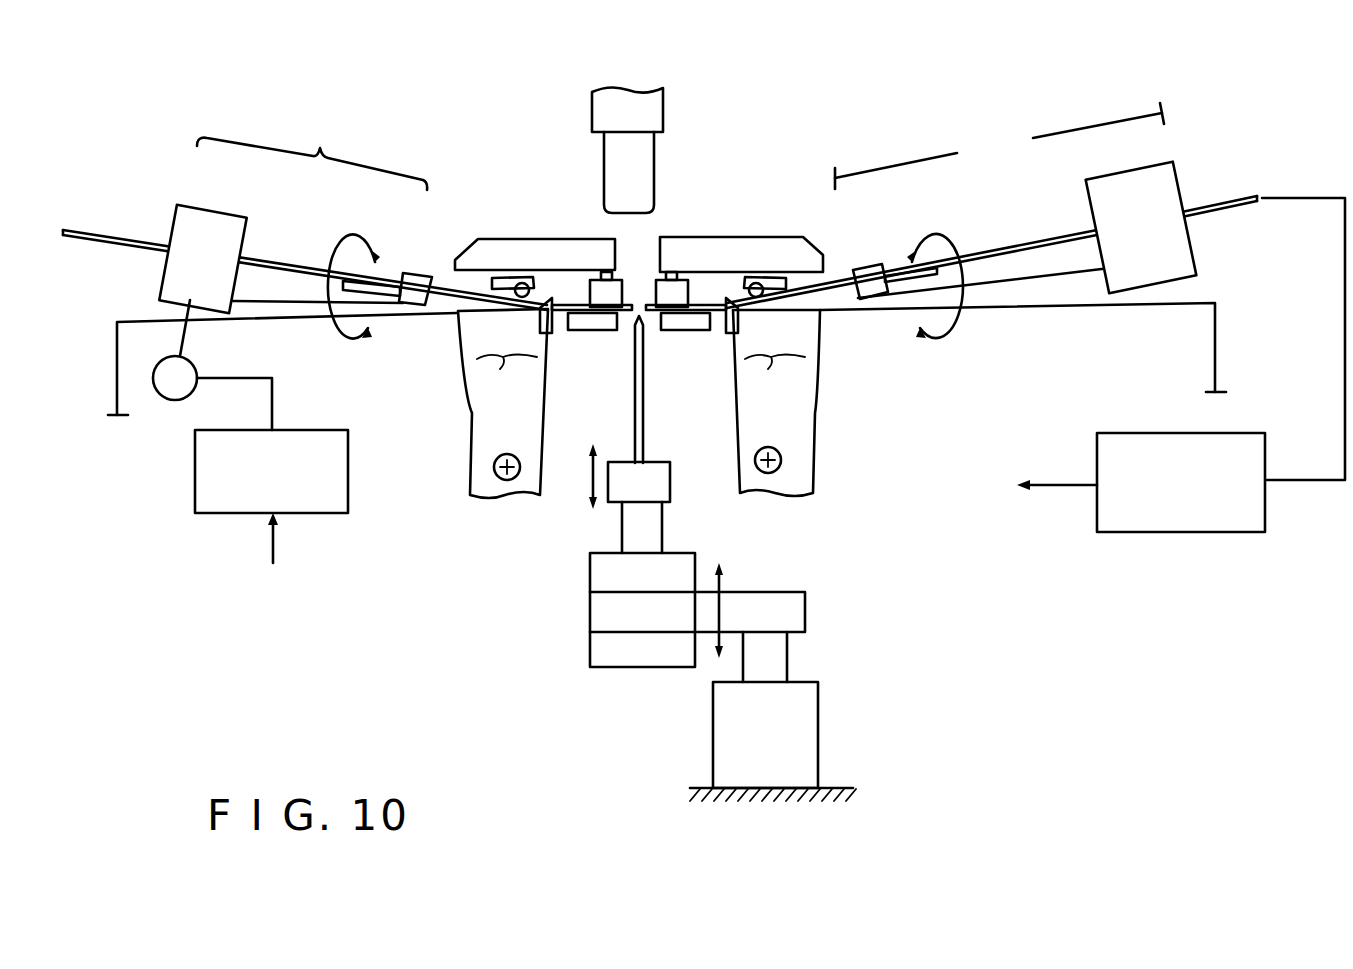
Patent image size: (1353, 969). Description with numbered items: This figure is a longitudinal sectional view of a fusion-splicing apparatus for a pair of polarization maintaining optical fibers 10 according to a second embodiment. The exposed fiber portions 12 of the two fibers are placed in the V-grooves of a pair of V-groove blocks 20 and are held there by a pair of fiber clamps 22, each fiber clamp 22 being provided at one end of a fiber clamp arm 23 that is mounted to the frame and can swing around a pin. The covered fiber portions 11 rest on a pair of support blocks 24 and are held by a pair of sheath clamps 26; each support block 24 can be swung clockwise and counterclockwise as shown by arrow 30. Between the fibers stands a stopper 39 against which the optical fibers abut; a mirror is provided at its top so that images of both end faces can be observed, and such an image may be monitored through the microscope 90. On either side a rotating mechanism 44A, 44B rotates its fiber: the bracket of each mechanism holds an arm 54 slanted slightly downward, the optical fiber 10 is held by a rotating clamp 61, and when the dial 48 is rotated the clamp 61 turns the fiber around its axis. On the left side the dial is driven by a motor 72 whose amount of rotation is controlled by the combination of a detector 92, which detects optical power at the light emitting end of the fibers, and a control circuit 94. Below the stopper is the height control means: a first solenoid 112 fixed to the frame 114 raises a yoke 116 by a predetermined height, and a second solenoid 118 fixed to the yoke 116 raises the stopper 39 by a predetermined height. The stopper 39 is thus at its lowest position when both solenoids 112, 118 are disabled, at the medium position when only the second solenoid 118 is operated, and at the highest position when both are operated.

The polarization maintaining optical fiber 10 is at (104, 230).
The covered fiber portion 11 is at (522, 308).
The exposed fiber portion 12 is at (583, 330).
The V-groove block 20 is at (605, 330).
The fiber clamp 22 is at (593, 293).
The fiber clamp arm 23 is at (530, 250).
The support block 24 is at (472, 429).
The sheath clamp 26 is at (520, 280).
The arrow 30 is at (641, 380).
The stopper 39 is at (646, 423).
The rotating mechanism 44A is at (1031, 201).
The rotating mechanism 44B is at (280, 281).
The dial 48 is at (1163, 192).
The arm 54 is at (284, 285).
The rotating clamp 61 is at (863, 263).
The motor 72 is at (172, 402).
The microscope 90 is at (663, 107).
The detector 92 is at (1137, 433).
The control circuit 94 is at (348, 483).
The first solenoid 112 is at (798, 698).
The frame 114 is at (1215, 340).
The yoke 116 is at (757, 605).
The second solenoid 118 is at (597, 570).